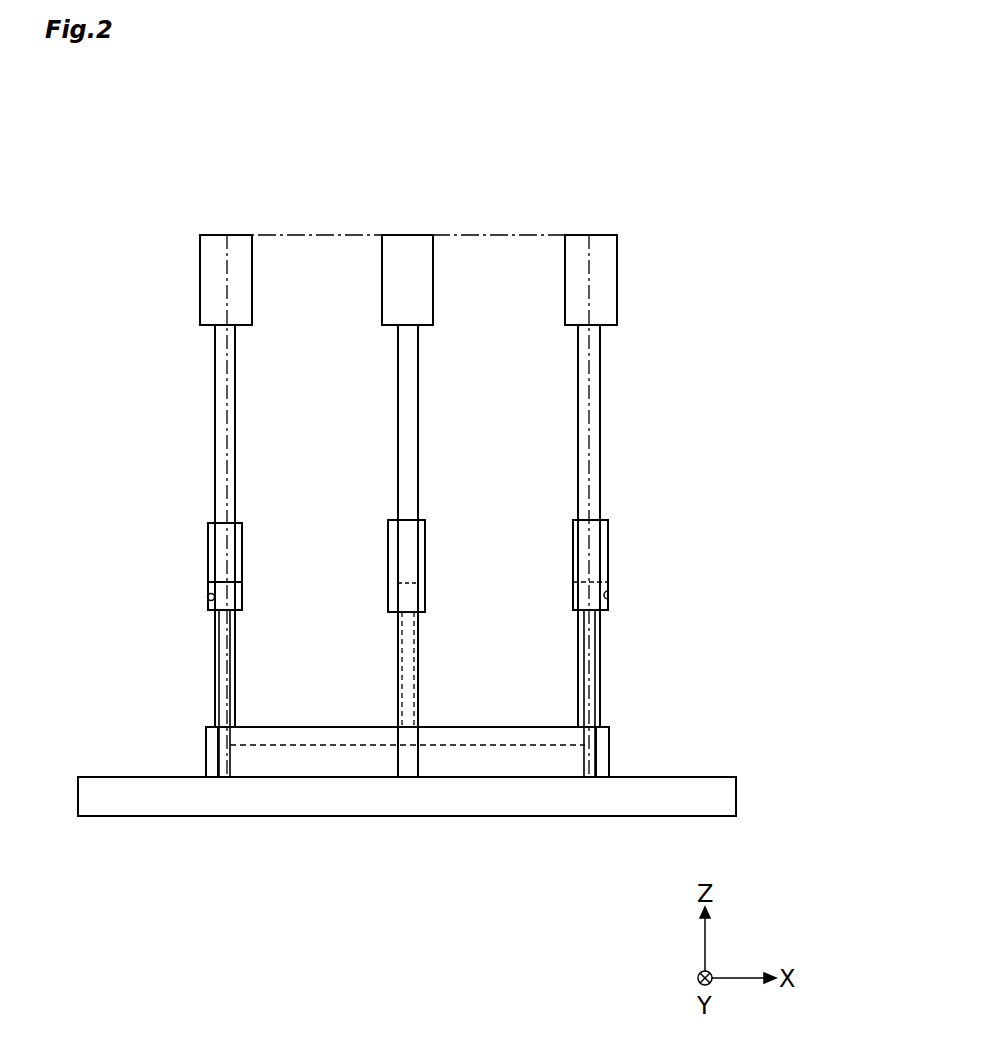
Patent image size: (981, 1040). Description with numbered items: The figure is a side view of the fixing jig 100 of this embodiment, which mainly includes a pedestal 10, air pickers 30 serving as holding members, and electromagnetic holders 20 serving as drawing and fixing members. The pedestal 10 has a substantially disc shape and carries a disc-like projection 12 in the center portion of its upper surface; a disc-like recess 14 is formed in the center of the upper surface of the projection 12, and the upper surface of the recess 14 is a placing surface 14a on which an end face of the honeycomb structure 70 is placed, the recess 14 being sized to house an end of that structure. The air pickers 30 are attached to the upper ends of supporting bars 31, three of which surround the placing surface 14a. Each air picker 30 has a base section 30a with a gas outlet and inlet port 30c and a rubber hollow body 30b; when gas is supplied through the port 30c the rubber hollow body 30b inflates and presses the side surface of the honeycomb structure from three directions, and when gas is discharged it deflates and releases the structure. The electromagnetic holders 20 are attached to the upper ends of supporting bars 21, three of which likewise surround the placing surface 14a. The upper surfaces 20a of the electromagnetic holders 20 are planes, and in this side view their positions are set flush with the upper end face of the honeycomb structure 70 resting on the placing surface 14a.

The fixing jig 100 is at (160, 478).
The pedestal 10 is at (722, 797).
The projection 12 is at (609, 756).
The recess 14 is at (590, 722).
The placing surface 14a is at (535, 745).
The electromagnetic holder 20 is at (200, 283).
The upper surface of electromagnetic holder 20a is at (226, 235).
The supporting bar 21 is at (235, 425).
The air picker 30 is at (243, 551).
The base section 30a is at (207, 589).
The rubber hollow body 30b is at (207, 538).
The gas outlet and inlet port 30c is at (207, 598).
The supporting bar 31 is at (232, 655).
The honeycomb structure 70 is at (502, 235).